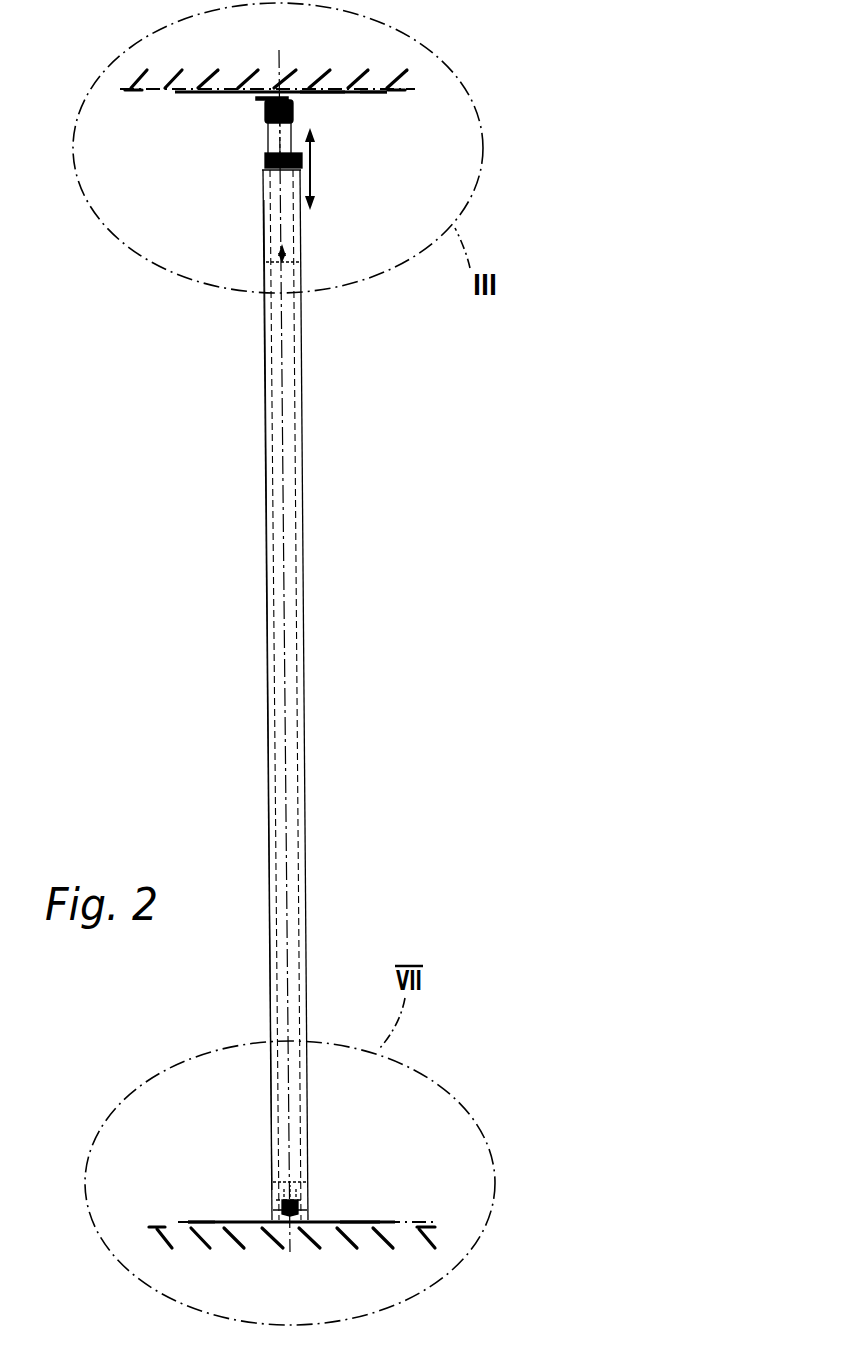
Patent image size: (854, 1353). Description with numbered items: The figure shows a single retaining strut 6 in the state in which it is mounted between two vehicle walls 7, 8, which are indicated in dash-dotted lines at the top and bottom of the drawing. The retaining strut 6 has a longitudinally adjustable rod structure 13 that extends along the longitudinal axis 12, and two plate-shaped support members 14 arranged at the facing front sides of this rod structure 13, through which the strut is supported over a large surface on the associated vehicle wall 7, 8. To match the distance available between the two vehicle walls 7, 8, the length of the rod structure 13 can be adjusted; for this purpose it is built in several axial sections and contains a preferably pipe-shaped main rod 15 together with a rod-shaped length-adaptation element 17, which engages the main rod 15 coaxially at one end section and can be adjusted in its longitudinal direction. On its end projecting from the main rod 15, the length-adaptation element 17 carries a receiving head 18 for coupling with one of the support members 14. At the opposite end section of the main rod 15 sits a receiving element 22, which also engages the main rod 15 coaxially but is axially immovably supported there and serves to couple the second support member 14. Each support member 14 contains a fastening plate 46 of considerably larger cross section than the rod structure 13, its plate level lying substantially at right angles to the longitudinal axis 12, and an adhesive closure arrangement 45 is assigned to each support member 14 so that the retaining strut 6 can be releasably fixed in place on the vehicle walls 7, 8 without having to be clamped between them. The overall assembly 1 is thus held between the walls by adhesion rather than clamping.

The partition post assembly 1 is at (234, 566).
The retaining strut 6 is at (320, 602).
The vehicle wall 7 is at (233, 87).
The vehicle wall 8 is at (258, 1247).
The longitudinal axis 12 is at (288, 681).
The rod structure 13 is at (257, 729).
The support member 14 is at (250, 104).
The main rod 15 is at (294, 803).
The length-adaptation element 17 is at (271, 134).
The receiving head 18 is at (296, 113).
The receiving element 22 is at (311, 1188).
The adhesive closure arrangement 45 is at (405, 94).
The fastening plate 46 is at (337, 92).